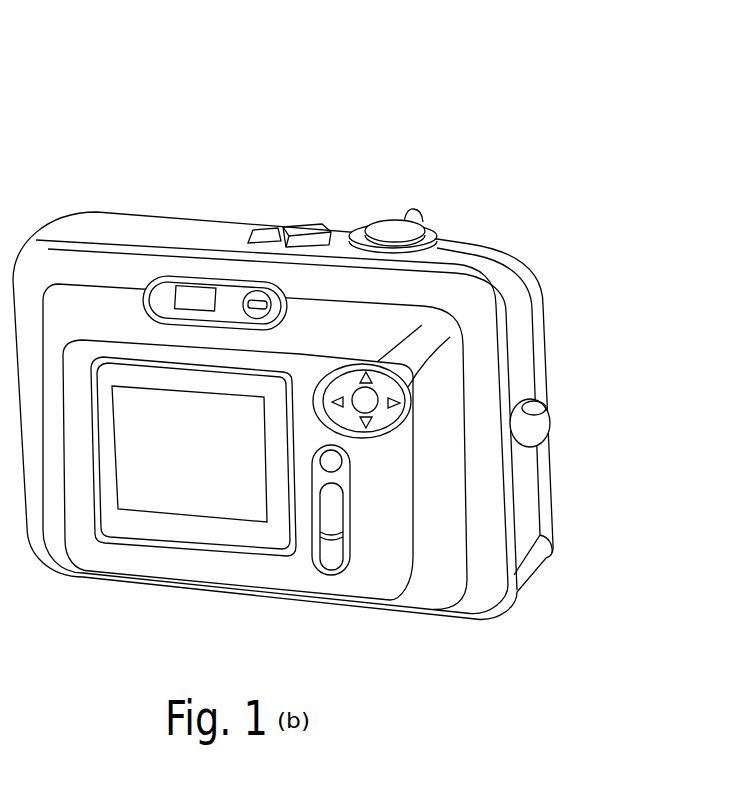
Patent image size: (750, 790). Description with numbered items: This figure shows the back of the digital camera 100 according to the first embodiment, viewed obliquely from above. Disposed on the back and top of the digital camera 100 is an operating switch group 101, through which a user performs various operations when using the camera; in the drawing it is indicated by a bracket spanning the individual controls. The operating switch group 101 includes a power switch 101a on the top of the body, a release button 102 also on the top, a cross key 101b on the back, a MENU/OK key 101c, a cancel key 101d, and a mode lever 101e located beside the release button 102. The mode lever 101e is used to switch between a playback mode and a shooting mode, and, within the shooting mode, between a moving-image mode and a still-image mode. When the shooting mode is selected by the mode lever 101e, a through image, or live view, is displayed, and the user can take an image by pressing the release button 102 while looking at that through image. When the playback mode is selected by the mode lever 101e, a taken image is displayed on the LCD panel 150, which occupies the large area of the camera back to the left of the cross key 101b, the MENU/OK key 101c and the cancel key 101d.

The digital camera 100 is at (269, 98).
The operating switch group 101 is at (636, 557).
The power switch 101a is at (302, 231).
The cross key 101b is at (387, 417).
The MENU/OK key 101c is at (329, 498).
The cancel key 101d is at (333, 568).
The mode lever 101e is at (427, 223).
The release button 102 is at (380, 228).
The LCD panel 150 is at (198, 505).